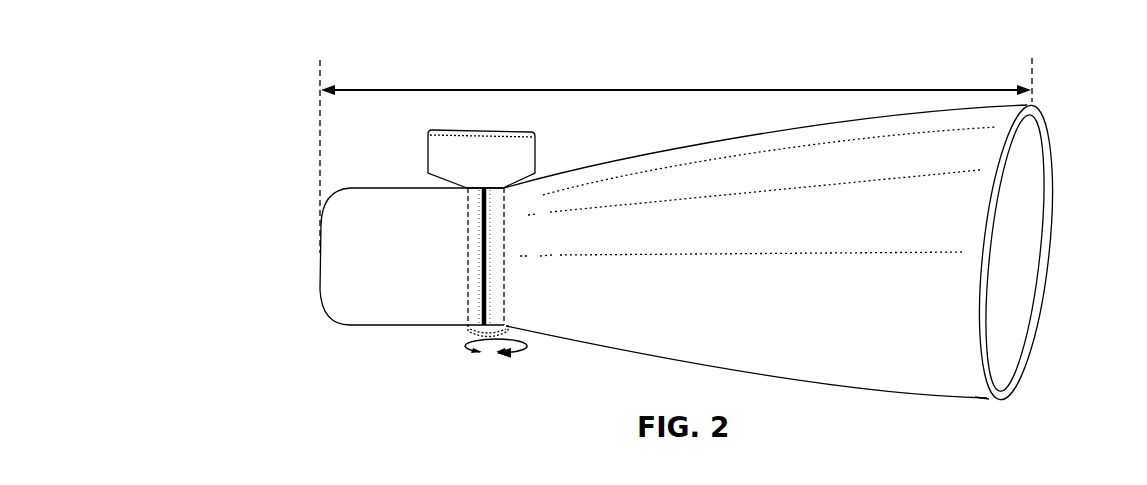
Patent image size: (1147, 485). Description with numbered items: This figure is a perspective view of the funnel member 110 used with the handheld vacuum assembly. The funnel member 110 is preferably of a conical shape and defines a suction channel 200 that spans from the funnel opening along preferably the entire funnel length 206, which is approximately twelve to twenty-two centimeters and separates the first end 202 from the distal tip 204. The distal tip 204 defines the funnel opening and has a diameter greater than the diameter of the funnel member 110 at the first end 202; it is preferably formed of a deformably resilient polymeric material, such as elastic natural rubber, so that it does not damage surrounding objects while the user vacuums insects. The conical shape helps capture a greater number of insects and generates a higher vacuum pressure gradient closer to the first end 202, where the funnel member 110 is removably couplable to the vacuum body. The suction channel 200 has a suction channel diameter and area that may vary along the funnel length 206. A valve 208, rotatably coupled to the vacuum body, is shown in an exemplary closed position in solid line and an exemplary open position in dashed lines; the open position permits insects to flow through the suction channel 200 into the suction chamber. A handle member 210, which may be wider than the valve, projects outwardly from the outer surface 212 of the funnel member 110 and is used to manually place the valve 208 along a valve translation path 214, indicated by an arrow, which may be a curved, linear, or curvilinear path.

The funnel member 110 is at (987, 397).
The suction channel 200 is at (1007, 318).
The first end 202 is at (318, 257).
The distal tip 204 is at (1007, 180).
The funnel length 206 is at (394, 90).
The valve 208 is at (484, 297).
The handle member 210 is at (513, 162).
The outer surface 212 is at (714, 330).
The valve translation path 214 is at (519, 349).